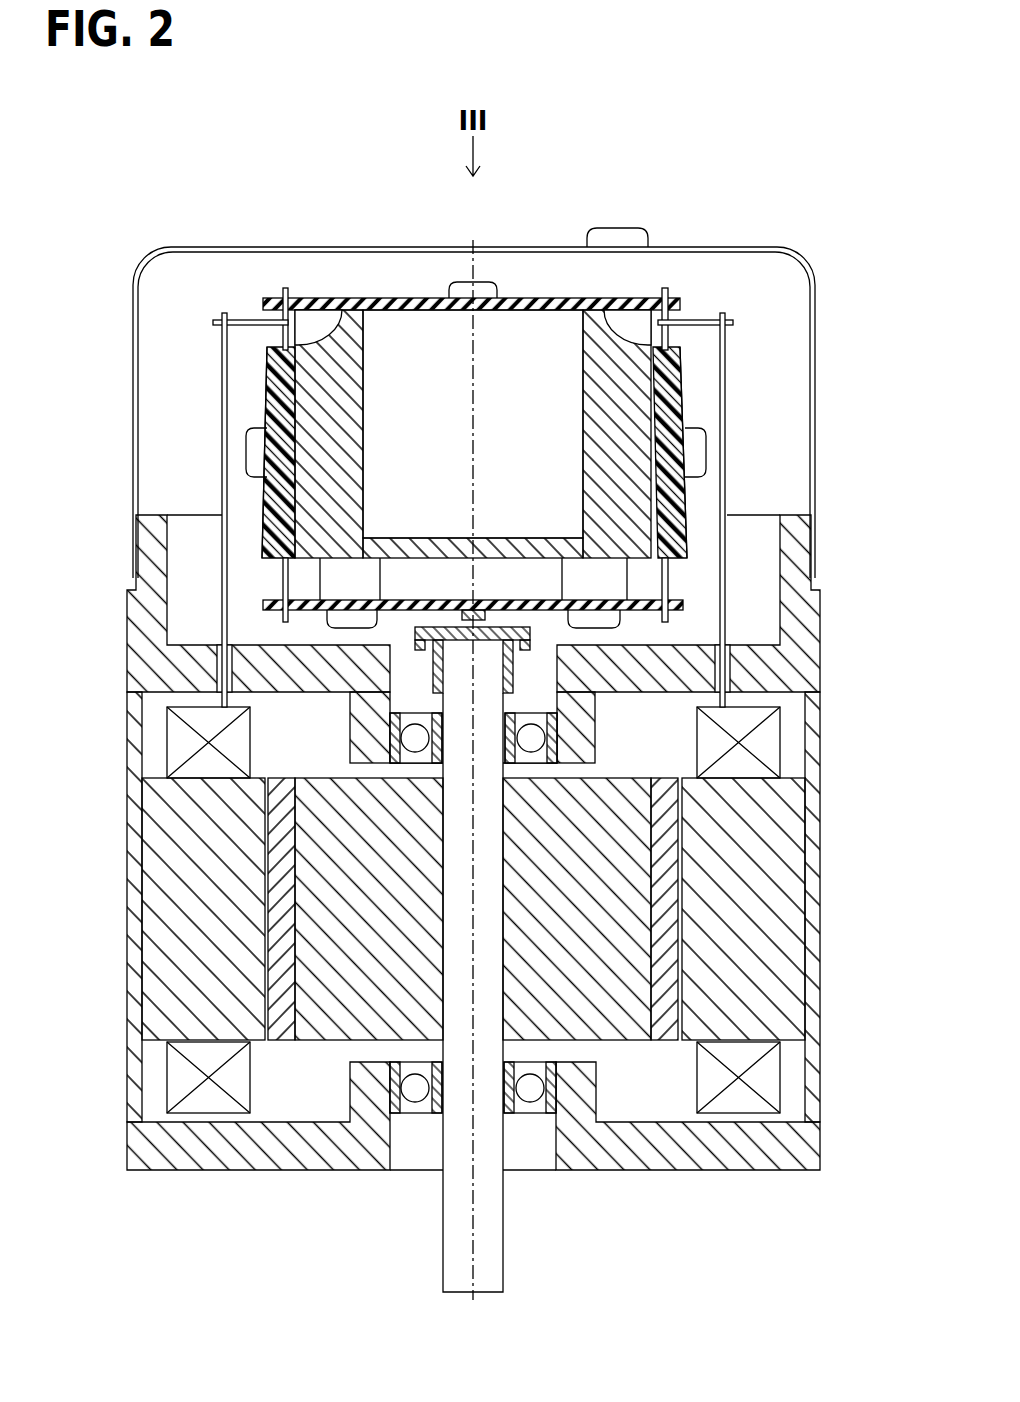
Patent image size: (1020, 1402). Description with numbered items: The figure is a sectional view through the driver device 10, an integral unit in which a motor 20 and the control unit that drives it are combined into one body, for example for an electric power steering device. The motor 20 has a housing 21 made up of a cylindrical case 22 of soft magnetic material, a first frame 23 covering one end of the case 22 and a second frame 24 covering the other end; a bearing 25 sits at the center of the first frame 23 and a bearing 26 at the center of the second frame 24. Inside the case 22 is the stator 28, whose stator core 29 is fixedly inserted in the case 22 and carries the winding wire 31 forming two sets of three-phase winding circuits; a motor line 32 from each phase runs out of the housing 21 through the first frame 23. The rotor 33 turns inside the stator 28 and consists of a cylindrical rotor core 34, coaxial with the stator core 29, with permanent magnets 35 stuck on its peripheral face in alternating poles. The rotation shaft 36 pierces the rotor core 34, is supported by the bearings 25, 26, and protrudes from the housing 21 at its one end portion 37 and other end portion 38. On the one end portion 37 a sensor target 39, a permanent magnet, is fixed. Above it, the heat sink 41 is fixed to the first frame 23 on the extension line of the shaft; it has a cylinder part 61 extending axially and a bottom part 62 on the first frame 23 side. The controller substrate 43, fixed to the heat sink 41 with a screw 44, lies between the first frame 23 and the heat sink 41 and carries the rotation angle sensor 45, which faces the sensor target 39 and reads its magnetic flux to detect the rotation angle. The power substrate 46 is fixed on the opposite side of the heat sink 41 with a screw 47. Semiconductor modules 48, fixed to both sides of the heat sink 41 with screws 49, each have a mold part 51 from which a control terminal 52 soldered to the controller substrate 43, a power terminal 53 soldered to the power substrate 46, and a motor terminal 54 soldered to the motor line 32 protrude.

The driver device 10 is at (138, 238).
The motor 20 is at (453, 770).
The housing 21 is at (835, 608).
The case 22 is at (812, 985).
The first frame 23 is at (793, 665).
The second frame 24 is at (812, 1140).
The bearing 25 is at (537, 743).
The bearing 26 is at (533, 1093).
The stator 28 is at (413, 945).
The stator core 29 is at (190, 980).
The winding wire 31 is at (180, 1078).
The motor line 32 is at (220, 422).
The rotor 33 is at (465, 1025).
The rotor core 34 is at (342, 1025).
The permanent magnets 35 is at (283, 1032).
The rotation shaft 36 is at (493, 985).
The one end portion 37 is at (460, 698).
The other end portion 38 is at (494, 1262).
The sensor target 39 is at (515, 690).
The heat sink 41 is at (324, 320).
The controller substrate 43 is at (678, 603).
The screw 44 is at (333, 618).
The rotation angle sensor 45 is at (525, 632).
The power substrate 46 is at (522, 305).
The screw 47 is at (462, 287).
The semiconductor module 48 is at (277, 403).
The screw 49 is at (255, 453).
The mold part 51 is at (273, 490).
The control terminal 52 is at (275, 580).
The power terminal 53 is at (283, 290).
The motor terminal 54 is at (222, 313).
The cylinder part 61 is at (323, 385).
The bottom part 62 is at (422, 537).